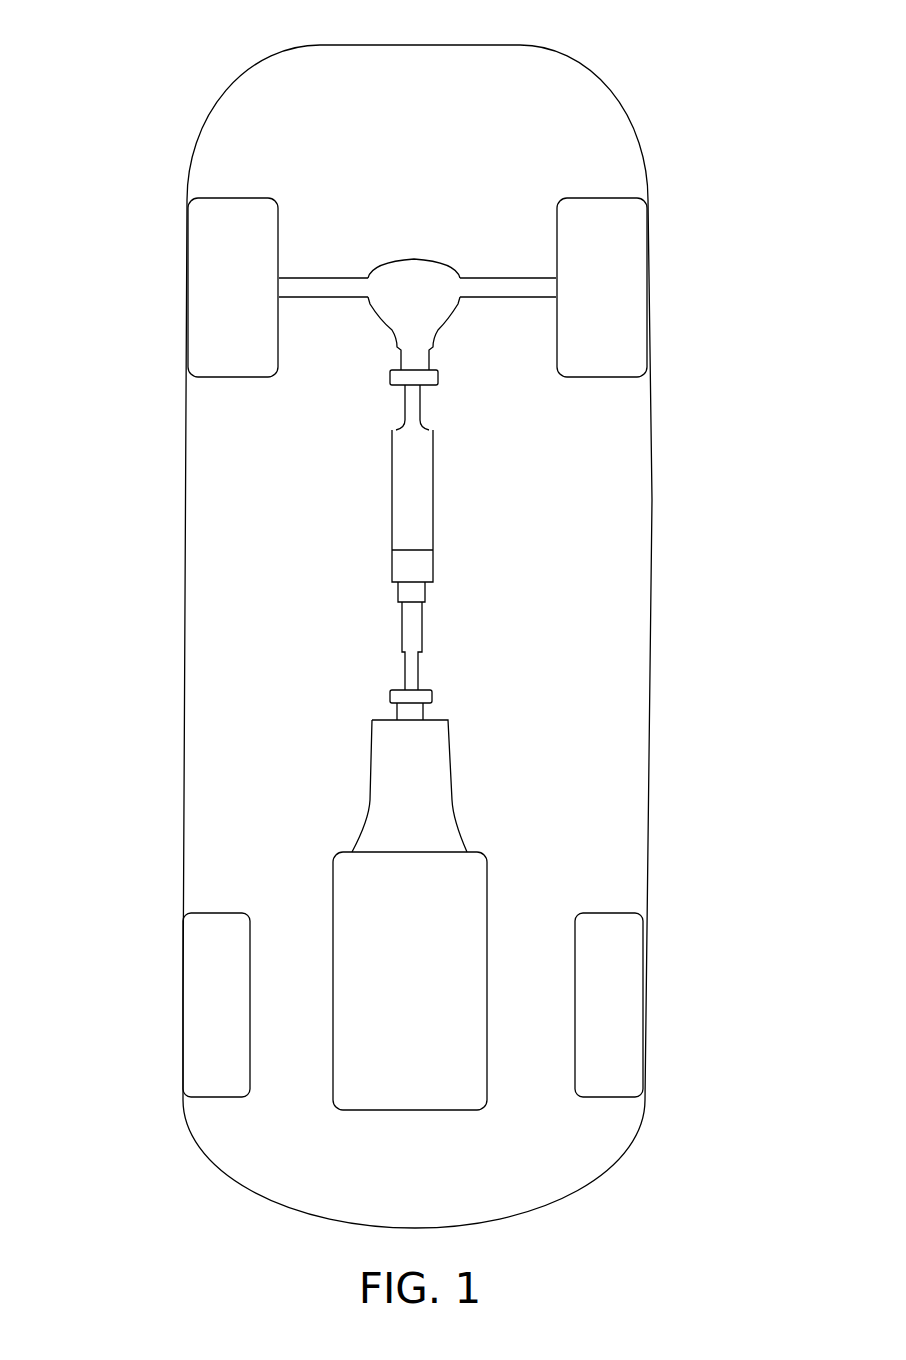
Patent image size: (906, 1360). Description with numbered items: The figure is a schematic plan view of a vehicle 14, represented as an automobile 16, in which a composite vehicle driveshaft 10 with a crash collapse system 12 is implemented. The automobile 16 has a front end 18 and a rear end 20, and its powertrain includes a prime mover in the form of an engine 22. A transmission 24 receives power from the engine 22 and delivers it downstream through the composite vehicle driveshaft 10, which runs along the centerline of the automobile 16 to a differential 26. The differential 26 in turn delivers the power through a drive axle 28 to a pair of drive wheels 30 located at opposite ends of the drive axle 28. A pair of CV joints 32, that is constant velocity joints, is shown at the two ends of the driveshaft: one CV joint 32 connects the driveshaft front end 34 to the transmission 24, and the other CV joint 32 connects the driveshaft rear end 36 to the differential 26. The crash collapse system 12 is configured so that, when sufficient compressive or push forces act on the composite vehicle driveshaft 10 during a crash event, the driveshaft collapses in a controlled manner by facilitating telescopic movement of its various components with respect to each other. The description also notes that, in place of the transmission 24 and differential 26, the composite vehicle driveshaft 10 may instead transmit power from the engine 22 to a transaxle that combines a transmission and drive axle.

The composite vehicle driveshaft 10 is at (518, 520).
The crash collapse system 12 is at (447, 568).
The vehicle 14 is at (125, 83).
The automobile 16 is at (127, 265).
The front end 18 is at (663, 1083).
The rear end 20 is at (743, 190).
The engine 22 is at (396, 1031).
The transmission 24 is at (398, 796).
The differential 26 is at (417, 287).
The drive axle 28 is at (457, 212).
The drive wheels 30 is at (253, 183).
The CV joints 32 is at (443, 395).
The driveshaft front end 34 is at (392, 643).
The driveshaft rear end 36 is at (392, 397).